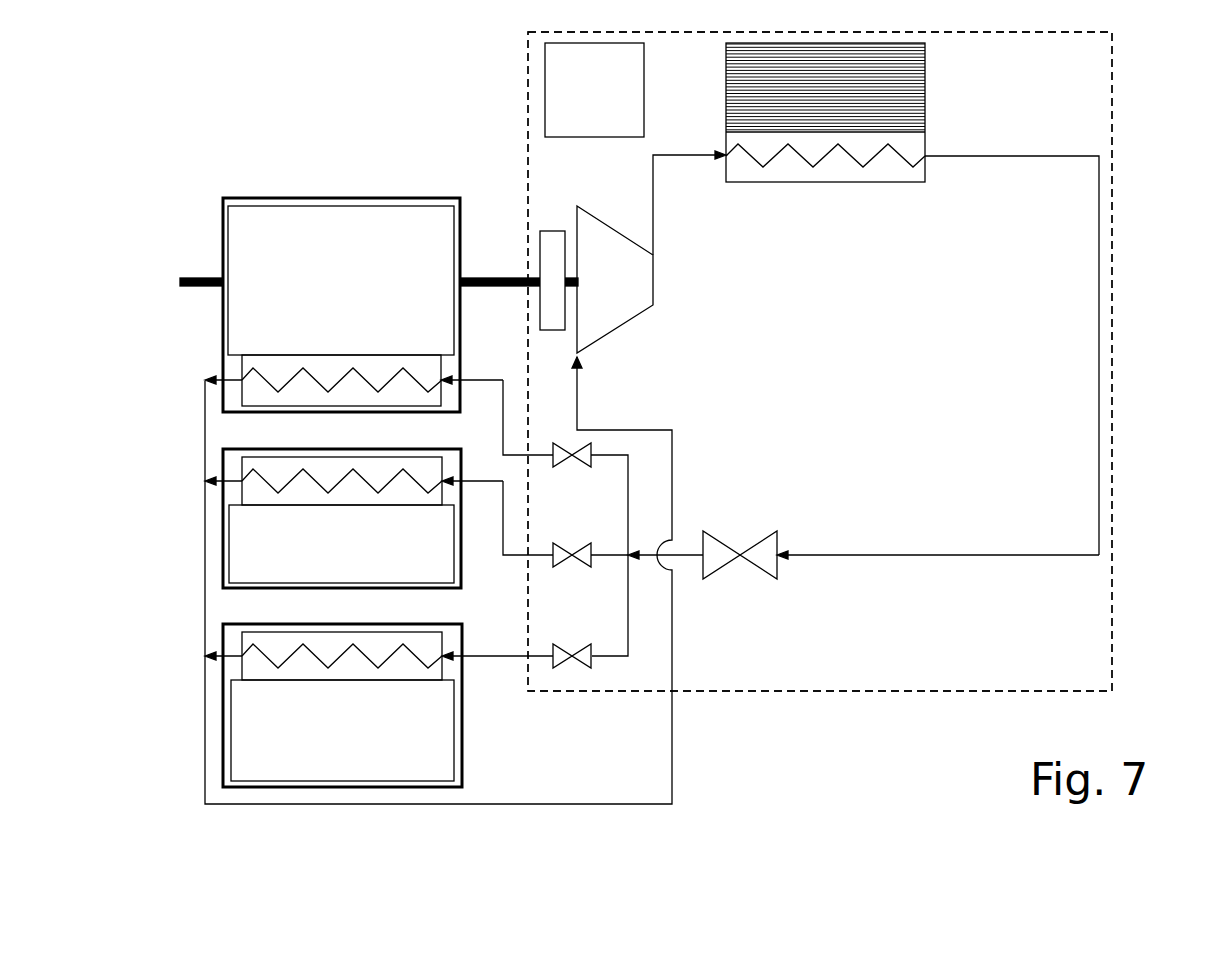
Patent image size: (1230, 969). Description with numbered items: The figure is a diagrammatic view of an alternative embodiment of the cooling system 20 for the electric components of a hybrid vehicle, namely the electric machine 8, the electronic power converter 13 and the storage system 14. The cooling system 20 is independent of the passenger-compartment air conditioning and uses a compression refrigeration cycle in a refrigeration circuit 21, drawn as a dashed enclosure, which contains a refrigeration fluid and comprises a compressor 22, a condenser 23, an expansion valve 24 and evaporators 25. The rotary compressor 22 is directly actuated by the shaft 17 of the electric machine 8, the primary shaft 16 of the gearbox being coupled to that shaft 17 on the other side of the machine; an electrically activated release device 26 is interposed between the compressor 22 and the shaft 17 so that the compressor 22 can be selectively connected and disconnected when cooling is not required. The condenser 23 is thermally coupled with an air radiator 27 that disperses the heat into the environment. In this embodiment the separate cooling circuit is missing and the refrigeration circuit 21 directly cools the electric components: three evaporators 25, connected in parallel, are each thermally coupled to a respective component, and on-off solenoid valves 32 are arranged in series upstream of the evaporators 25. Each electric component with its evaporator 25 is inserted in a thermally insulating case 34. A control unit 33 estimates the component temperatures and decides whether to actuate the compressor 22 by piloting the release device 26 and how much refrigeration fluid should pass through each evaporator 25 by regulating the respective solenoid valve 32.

The electric machine 8 is at (341, 280).
The electronic power converter 13 is at (341, 544).
The storage system 14 is at (342, 730).
The primary shaft 16 is at (197, 276).
The shaft 17 is at (495, 276).
The cooling system 20 is at (943, 720).
The refrigeration circuit 21 is at (1130, 289).
The compressor 22 is at (615, 279).
The condenser 23 is at (783, 168).
The expansion valve 24 is at (768, 545).
The evaporator 25 is at (298, 395).
The release device 26 is at (555, 238).
The air radiator 27 is at (825, 112).
The on-off solenoid valve 32 is at (584, 460).
The control unit 33 is at (594, 90).
The thermally insulating case 34 is at (320, 198).